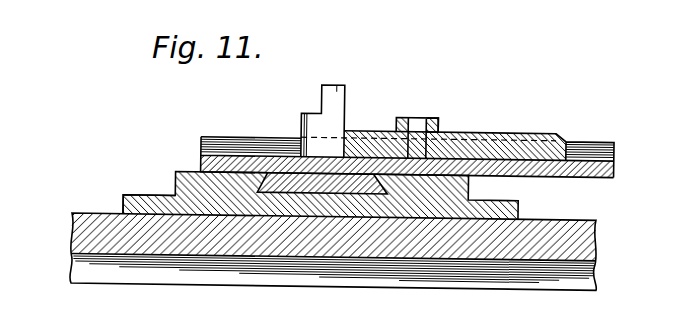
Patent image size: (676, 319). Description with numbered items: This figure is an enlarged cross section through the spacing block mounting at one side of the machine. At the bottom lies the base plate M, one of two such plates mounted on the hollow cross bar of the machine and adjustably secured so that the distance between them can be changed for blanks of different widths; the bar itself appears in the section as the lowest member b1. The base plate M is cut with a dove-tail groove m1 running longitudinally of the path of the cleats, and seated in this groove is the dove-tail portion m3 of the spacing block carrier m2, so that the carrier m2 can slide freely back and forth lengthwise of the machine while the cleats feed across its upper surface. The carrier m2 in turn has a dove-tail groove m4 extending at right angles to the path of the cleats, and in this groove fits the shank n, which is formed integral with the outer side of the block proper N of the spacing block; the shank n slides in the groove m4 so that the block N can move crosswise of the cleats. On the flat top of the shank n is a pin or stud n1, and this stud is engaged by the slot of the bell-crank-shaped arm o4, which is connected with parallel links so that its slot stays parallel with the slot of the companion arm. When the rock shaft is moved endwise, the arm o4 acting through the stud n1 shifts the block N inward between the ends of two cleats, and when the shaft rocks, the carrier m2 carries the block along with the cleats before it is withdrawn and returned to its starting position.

The base plate M is at (134, 197).
The dove-tail groove m1 is at (306, 193).
The spacing block carrier m2 is at (201, 158).
The dove-tail portion m3 is at (371, 193).
The dove-tail groove m4 is at (234, 130).
The block proper N is at (313, 122).
The shank n is at (353, 131).
The pin or stud n1 is at (416, 118).
The arm o4 is at (438, 124).
The base plate b1 is at (150, 273).